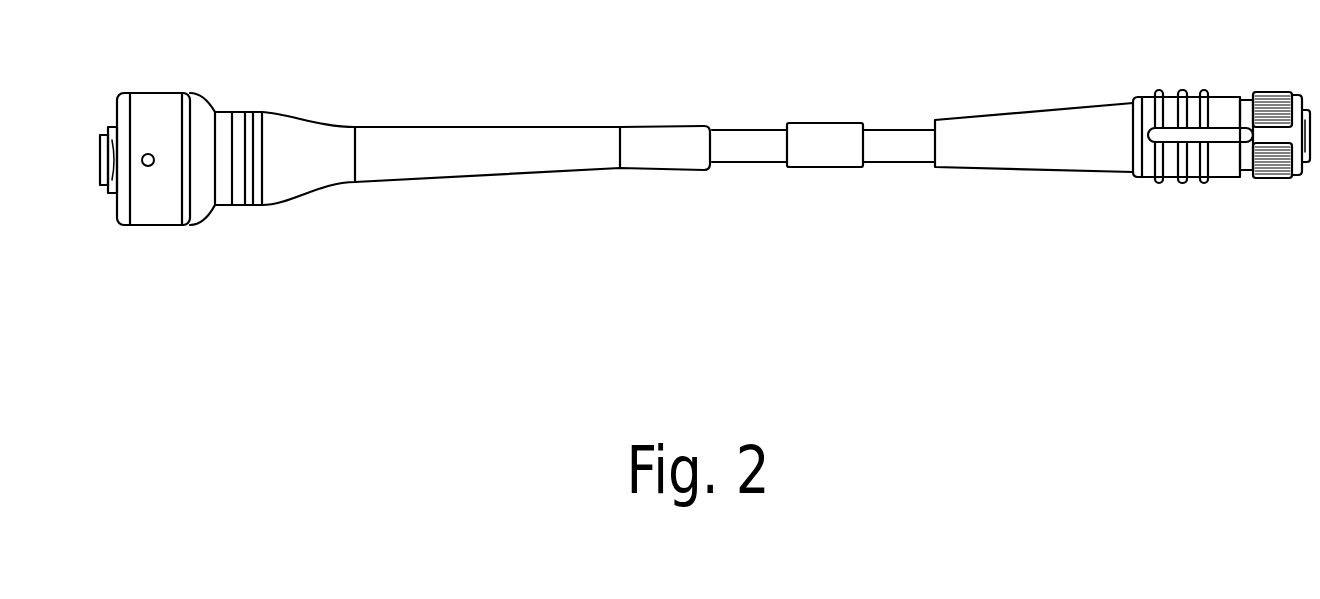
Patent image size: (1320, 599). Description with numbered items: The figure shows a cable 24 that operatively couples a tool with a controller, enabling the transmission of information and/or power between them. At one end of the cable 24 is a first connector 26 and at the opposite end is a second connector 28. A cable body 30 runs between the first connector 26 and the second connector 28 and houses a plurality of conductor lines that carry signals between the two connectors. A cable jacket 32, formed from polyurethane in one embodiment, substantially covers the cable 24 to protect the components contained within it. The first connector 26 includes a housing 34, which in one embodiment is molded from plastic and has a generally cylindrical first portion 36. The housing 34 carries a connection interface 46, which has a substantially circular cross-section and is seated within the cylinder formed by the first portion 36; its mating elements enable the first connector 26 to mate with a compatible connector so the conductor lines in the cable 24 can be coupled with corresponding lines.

The cable 24 is at (661, 190).
The first connector 26 is at (137, 184).
The second connector 28 is at (1307, 186).
The cable body 30 is at (556, 125).
The cable jacket 32 is at (739, 164).
The housing 34 is at (78, 129).
The first portion 36 is at (107, 191).
The connection interface 46 is at (100, 160).